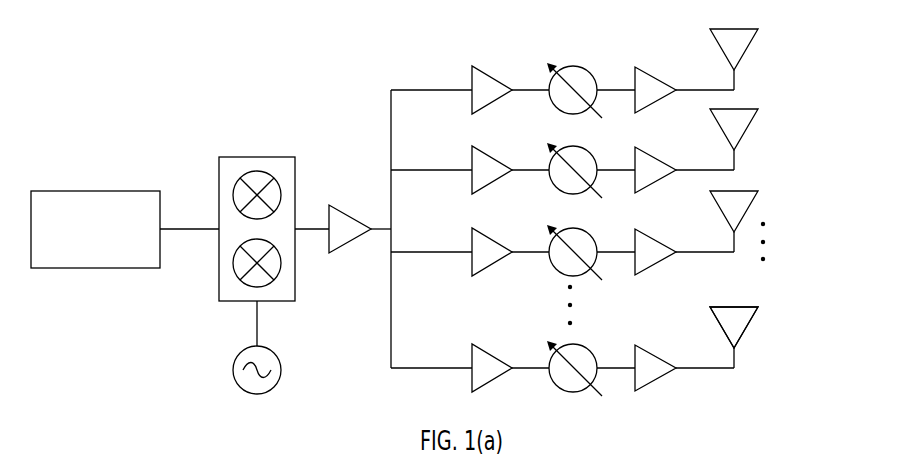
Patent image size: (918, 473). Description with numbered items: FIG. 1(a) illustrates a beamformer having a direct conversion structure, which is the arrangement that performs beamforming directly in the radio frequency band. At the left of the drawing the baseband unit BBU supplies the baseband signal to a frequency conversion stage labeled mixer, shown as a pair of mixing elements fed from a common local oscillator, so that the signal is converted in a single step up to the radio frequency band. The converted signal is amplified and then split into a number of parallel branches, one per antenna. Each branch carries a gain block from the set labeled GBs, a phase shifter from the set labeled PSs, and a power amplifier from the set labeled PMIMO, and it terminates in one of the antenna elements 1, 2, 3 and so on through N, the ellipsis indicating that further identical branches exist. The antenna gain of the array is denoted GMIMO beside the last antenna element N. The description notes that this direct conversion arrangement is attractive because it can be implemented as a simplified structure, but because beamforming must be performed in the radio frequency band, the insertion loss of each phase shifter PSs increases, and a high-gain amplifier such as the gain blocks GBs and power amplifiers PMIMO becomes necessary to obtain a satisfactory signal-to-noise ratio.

The baseband unit BBU is at (95, 229).
The mixer / up-converter mixer is at (257, 229).
The gain blocks GBs is at (492, 210).
The phase shifters PSs is at (574, 212).
The MIMO power amplifiers PMIMO is at (659, 210).
The antenna # 1 is at (740, 35).
The antenna # 2 is at (740, 114).
The antenna # 3 is at (740, 195).
The antenna # N is at (741, 311).
The MIMO antenna gain GMIMO is at (747, 328).